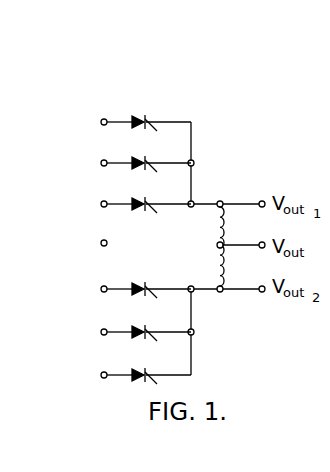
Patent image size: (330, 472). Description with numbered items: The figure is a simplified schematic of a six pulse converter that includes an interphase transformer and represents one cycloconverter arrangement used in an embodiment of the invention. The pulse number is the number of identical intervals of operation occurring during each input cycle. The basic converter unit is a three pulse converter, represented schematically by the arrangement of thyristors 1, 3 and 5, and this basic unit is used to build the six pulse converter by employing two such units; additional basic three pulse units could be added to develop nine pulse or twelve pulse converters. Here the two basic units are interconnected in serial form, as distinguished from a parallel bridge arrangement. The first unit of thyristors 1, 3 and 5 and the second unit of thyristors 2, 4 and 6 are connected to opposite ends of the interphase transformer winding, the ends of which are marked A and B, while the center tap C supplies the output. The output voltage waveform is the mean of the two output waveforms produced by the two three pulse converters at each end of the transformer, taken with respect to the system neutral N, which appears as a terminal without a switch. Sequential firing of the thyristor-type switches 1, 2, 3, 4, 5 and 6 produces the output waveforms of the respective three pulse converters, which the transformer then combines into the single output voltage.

The thyristor 1 is at (137, 122).
The thyristor 2 is at (138, 289).
The thyristor 3 is at (138, 163).
The thyristor 4 is at (138, 332).
The thyristor 5 is at (138, 204).
The thyristor 6 is at (138, 375).
The system neutral N is at (94, 244).
The upper end of winding A is at (220, 201).
The lower end of winding B is at (220, 292).
The center tap of winding C is at (217, 245).